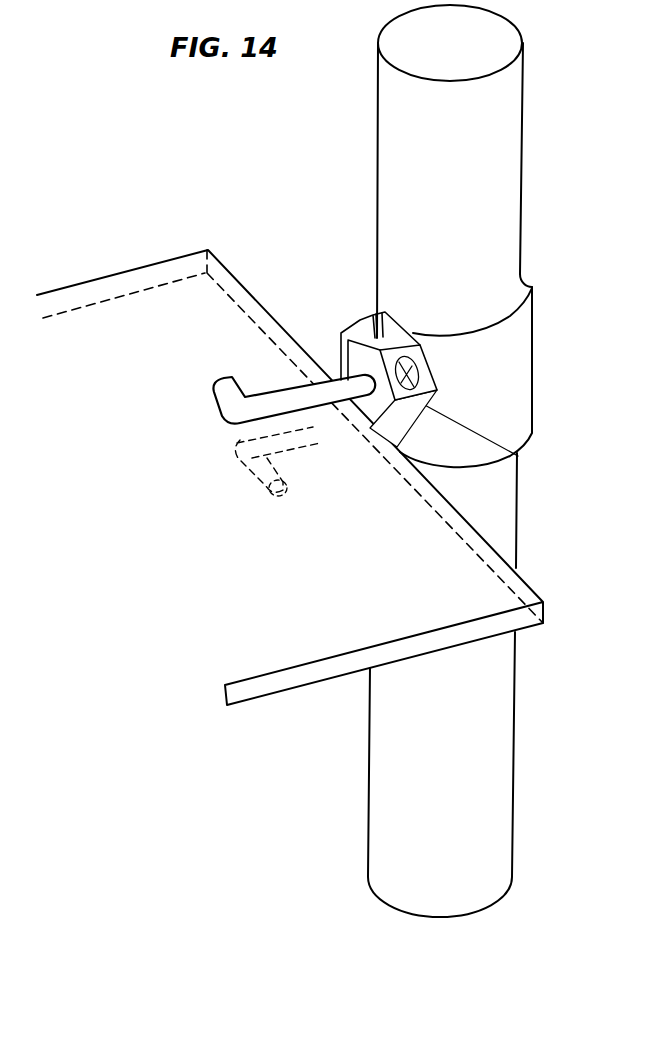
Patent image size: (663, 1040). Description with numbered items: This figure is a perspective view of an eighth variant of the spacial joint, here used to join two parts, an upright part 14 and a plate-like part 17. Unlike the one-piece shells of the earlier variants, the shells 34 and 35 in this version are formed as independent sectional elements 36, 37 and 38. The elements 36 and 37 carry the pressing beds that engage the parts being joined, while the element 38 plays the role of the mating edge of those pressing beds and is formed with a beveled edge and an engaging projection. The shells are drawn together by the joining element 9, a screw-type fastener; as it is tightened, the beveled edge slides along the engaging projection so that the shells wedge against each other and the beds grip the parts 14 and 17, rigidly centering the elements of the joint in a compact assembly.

The part 14 is at (483, 705).
The part 17 is at (257, 655).
The sectional element 36 is at (232, 397).
The shell 34 is at (325, 358).
The sectional element 38 is at (412, 333).
The shell 35 is at (517, 330).
The sectional element 37 is at (510, 373).
The joining element 9 is at (513, 453).